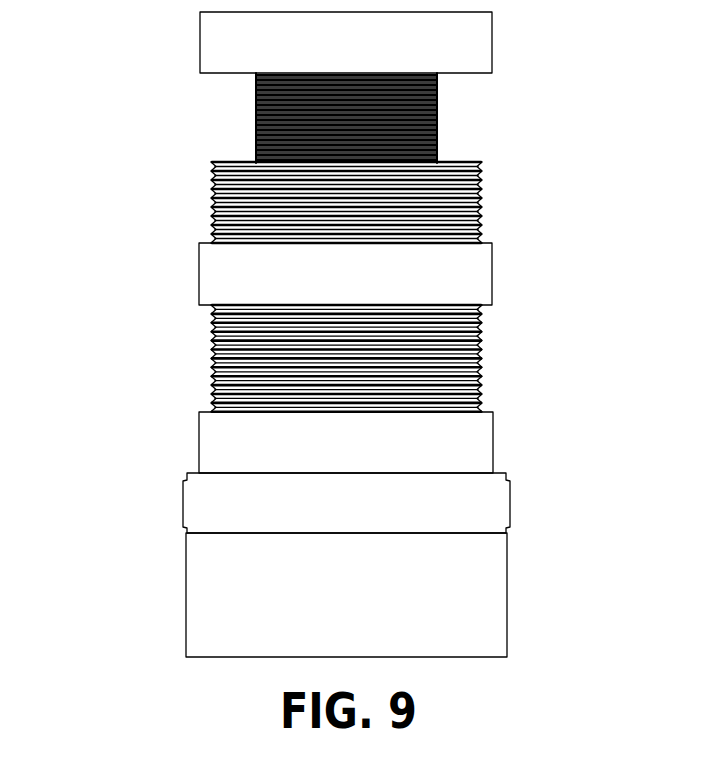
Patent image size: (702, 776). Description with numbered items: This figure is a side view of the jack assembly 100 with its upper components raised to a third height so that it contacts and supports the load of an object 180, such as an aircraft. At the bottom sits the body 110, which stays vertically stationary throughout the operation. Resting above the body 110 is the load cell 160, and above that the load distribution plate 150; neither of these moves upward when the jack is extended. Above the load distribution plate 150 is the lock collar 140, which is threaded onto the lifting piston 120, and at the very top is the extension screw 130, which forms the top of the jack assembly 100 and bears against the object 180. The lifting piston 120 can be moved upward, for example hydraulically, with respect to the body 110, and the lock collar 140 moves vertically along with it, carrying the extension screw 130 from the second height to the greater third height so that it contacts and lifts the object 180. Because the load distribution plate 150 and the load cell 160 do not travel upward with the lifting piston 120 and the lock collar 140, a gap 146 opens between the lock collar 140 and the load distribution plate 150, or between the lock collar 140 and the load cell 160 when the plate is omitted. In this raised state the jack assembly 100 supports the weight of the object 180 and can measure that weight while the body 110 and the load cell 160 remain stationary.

The jack assembly 100 is at (118, 57).
The body 110 is at (507, 567).
The lifting piston 120 is at (481, 196).
The extension screw 130 is at (437, 127).
The lock collar 140 is at (492, 276).
The gap 146 is at (497, 305).
The load distribution plate 150 is at (493, 428).
The load cell 160 is at (510, 508).
The object 180 is at (492, 52).